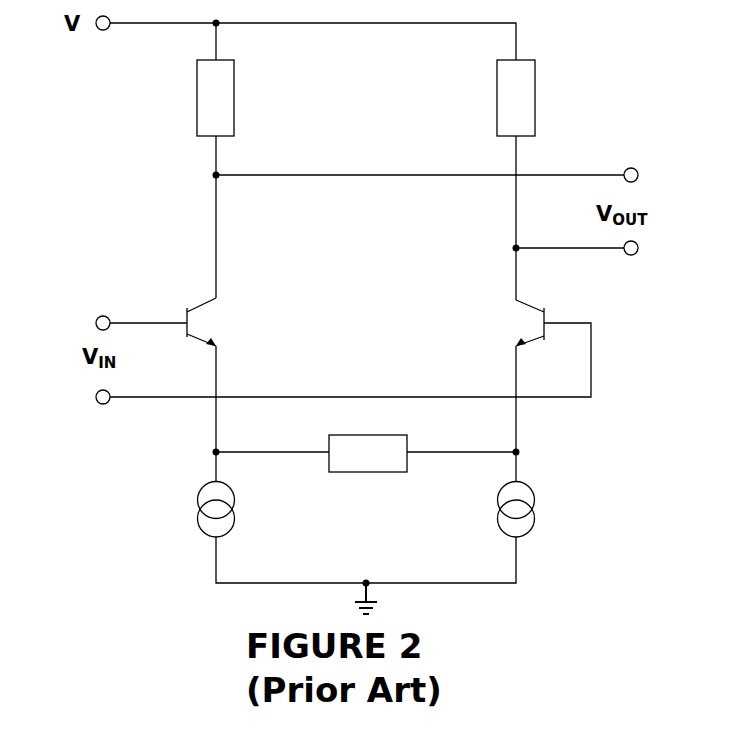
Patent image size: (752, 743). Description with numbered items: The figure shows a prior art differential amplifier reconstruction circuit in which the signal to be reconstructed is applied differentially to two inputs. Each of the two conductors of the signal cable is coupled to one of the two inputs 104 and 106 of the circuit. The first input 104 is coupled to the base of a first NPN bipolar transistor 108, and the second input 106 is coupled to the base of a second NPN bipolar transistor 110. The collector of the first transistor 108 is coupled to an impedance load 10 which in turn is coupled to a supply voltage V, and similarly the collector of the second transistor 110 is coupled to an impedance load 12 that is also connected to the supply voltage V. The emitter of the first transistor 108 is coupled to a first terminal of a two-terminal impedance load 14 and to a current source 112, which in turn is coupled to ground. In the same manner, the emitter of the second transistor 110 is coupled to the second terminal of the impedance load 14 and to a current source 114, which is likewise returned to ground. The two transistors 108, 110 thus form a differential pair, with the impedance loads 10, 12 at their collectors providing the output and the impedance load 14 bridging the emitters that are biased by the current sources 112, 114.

The impedance load Z10 10 is at (242, 98).
The impedance load Z12 12 is at (489, 98).
The impedance load Z14 14 is at (366, 473).
The first input 104 is at (116, 324).
The second input 106 is at (318, 366).
The first NPN bipolar transistor 108 is at (233, 322).
The second NPN bipolar transistor 110 is at (504, 323).
The current source 112 is at (190, 510).
The current source 114 is at (543, 510).